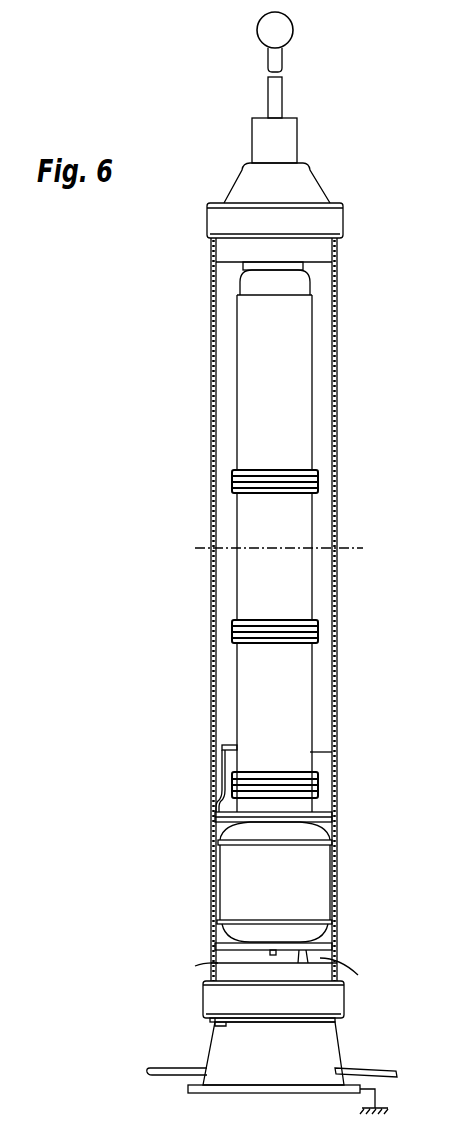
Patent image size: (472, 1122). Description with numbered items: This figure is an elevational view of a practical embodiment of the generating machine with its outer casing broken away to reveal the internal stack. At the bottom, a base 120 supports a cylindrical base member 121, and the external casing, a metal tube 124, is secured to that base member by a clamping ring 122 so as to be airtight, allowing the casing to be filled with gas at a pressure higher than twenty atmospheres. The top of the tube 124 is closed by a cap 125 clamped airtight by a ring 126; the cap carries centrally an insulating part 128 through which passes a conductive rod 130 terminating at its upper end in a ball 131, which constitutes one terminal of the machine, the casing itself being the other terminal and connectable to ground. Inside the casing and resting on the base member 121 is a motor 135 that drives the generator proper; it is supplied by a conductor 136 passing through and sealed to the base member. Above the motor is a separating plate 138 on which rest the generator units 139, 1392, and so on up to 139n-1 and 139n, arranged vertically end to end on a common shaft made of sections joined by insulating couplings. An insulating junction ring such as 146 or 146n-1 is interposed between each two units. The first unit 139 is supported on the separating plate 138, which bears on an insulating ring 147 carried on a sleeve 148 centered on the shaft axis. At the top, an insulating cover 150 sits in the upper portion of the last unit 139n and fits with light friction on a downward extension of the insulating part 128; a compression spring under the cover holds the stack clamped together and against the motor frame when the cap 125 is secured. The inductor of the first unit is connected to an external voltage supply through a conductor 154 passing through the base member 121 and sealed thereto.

The base 120 is at (247, 1075).
The cylindrical base member 121 is at (218, 1025).
The clamping ring 122 is at (338, 1007).
The metal tube 124 is at (213, 400).
The cap 125 is at (305, 190).
The ring 126 is at (212, 222).
The insulating part 128 is at (300, 268).
The conductive rod 130 is at (283, 69).
The ball 131 is at (290, 35).
The motor 135 is at (230, 870).
The conductor 136 is at (345, 968).
The separating plate 138 is at (215, 820).
The generator unit 139 is at (233, 710).
The last generator unit 139n is at (313, 383).
The next-to-last generator unit 139n-1 is at (313, 535).
The second generator unit 1392 is at (313, 603).
The insulating junction ring 146 is at (232, 632).
The insulating junction ring 146n-1 is at (318, 487).
The insulating ring 147 is at (316, 796).
The sleeve 148 is at (305, 806).
The insulating cover 150 is at (240, 290).
The conductor 154 is at (227, 775).